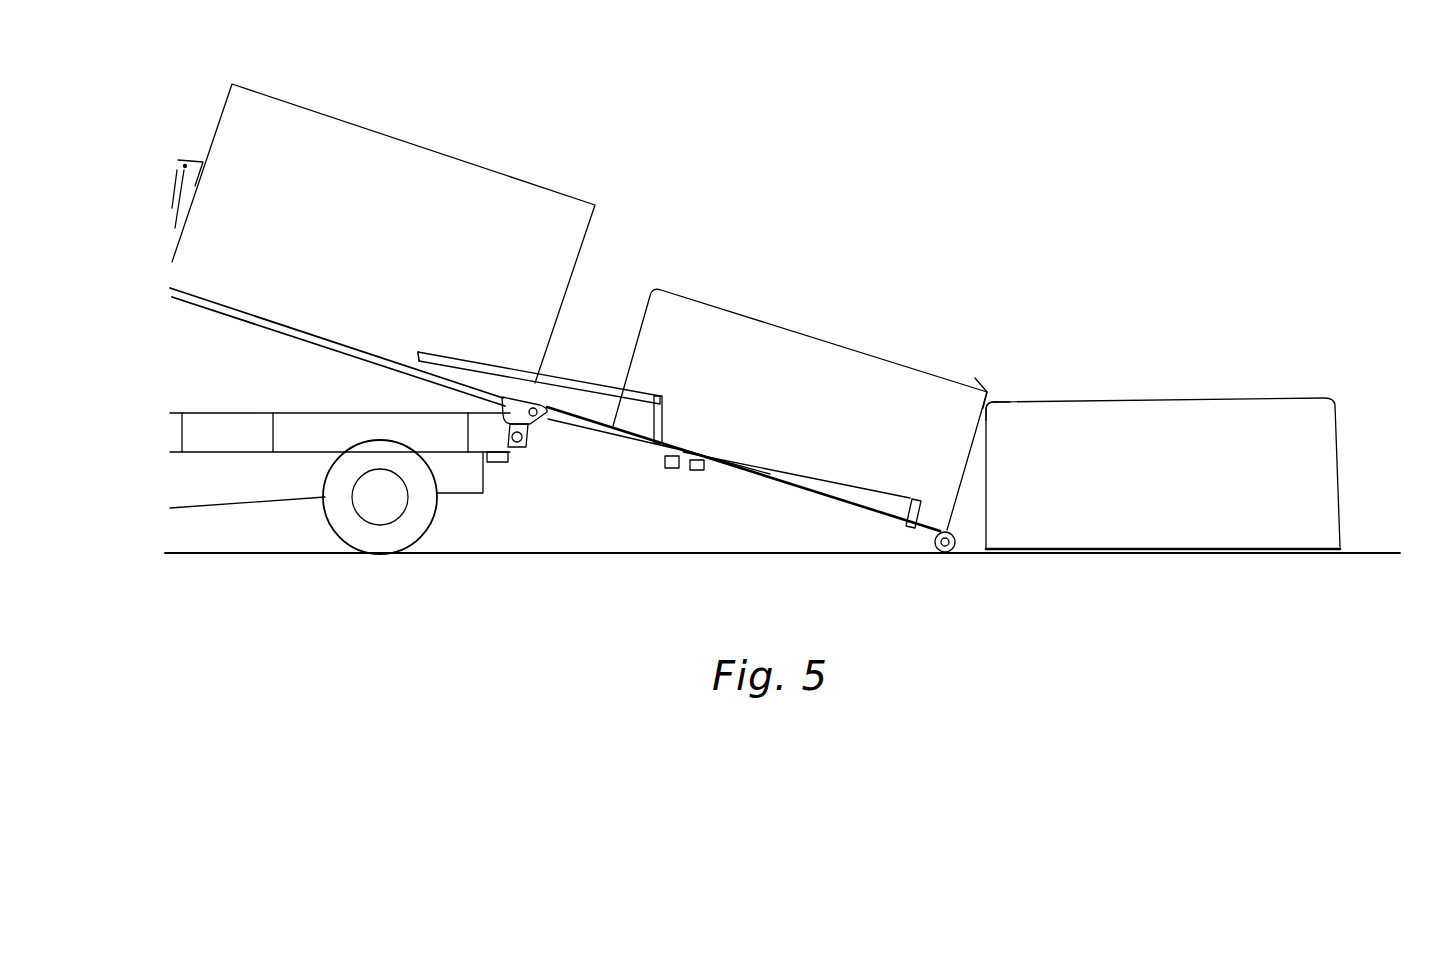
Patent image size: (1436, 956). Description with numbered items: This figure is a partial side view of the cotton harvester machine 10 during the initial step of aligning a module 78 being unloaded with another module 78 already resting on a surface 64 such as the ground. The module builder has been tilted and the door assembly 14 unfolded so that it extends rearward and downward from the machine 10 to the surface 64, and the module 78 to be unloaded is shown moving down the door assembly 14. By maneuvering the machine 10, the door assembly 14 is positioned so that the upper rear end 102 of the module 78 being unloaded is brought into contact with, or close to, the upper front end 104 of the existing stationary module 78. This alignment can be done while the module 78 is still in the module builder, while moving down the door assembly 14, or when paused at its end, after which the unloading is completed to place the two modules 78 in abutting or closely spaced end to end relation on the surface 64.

The machine 10 is at (477, 138).
The door assembly 14 is at (584, 445).
The module 78 is at (782, 318).
The upper rear end 102 is at (988, 392).
The upper front end 104 is at (992, 398).
The surface 64 is at (1366, 552).